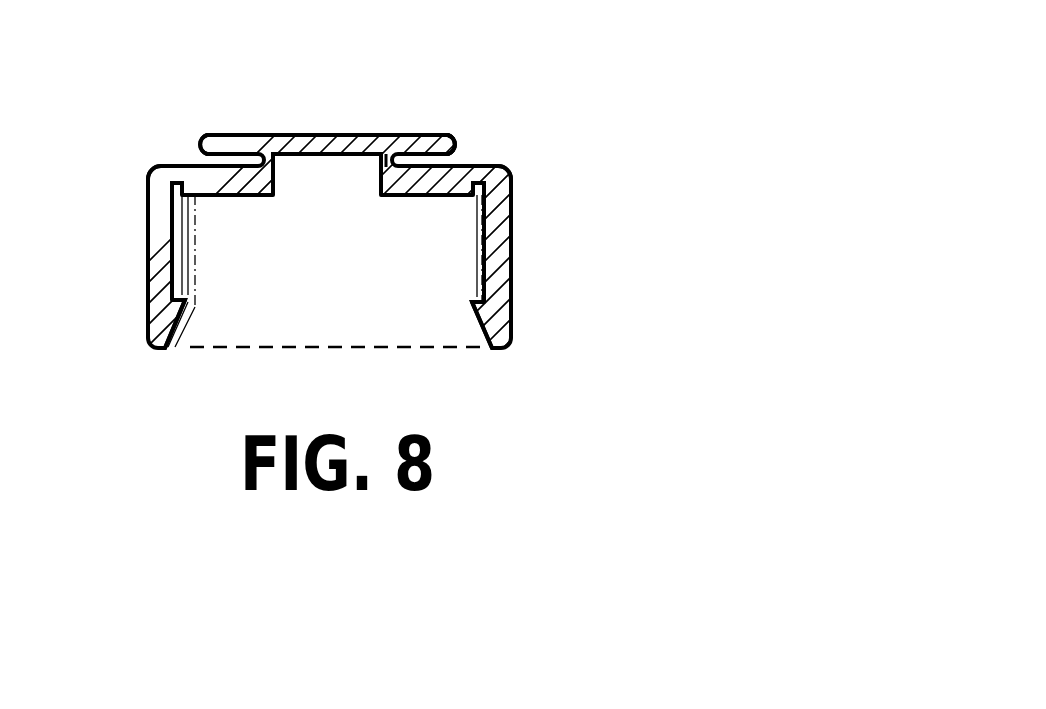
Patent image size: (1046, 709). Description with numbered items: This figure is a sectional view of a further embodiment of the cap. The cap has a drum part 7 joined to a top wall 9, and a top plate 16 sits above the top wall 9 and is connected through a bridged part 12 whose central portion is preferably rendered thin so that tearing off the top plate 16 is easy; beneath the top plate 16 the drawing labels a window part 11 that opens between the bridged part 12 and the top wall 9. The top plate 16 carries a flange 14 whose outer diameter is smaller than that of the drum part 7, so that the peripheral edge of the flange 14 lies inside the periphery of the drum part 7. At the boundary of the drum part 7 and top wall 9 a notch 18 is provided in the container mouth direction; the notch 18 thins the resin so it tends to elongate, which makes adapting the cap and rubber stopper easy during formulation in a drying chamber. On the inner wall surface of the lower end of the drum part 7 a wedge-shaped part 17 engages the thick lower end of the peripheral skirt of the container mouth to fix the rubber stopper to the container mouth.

The drum part 7 is at (482, 250).
The top wall 9 is at (468, 166).
The window part 11 is at (293, 177).
The bridged part 12 is at (387, 163).
The flange 14 is at (459, 138).
The top plate 16 is at (338, 146).
The wedge-shaped part 17 is at (488, 311).
The notch 18 is at (478, 207).